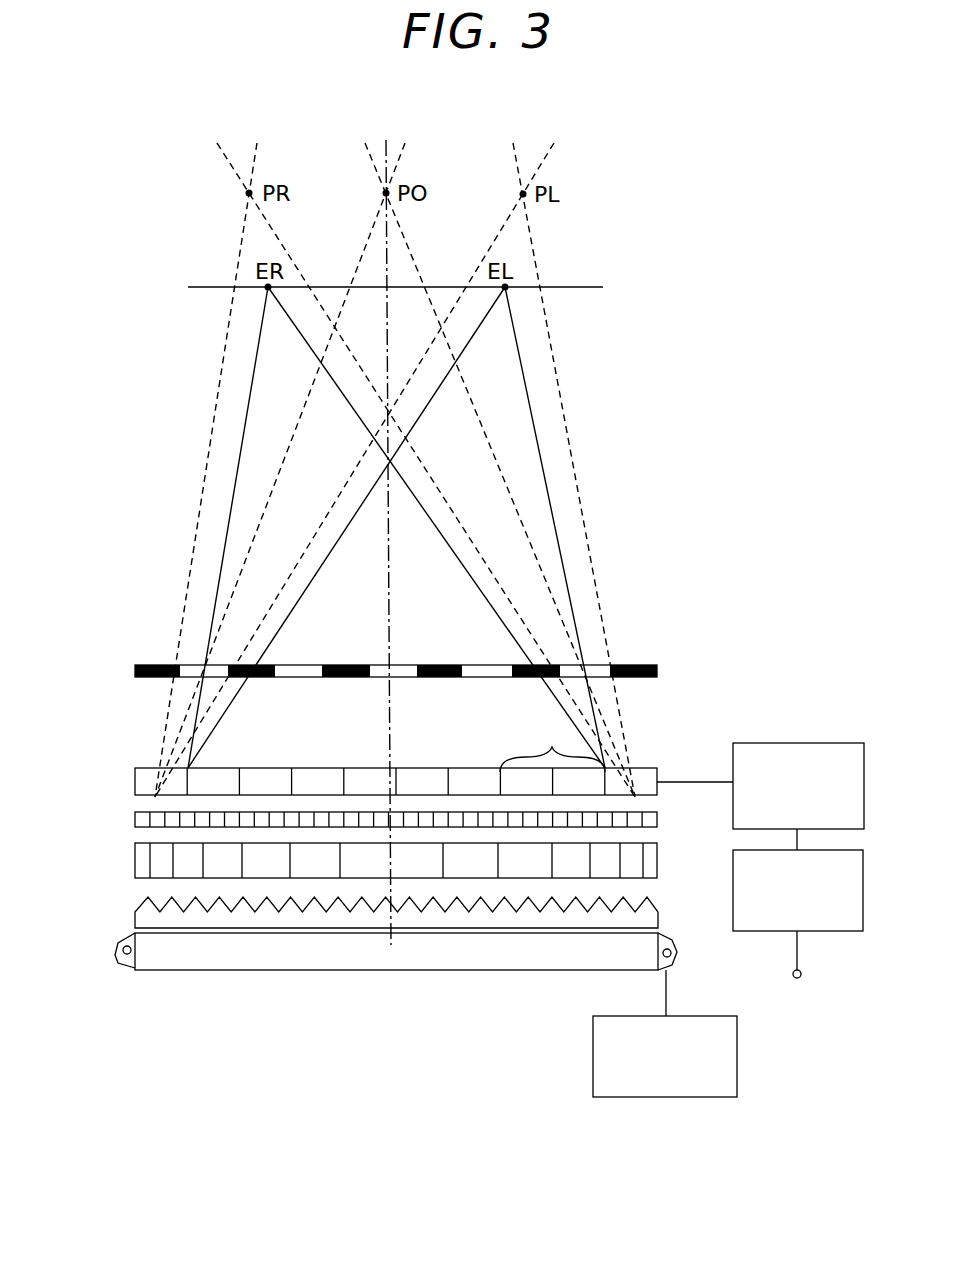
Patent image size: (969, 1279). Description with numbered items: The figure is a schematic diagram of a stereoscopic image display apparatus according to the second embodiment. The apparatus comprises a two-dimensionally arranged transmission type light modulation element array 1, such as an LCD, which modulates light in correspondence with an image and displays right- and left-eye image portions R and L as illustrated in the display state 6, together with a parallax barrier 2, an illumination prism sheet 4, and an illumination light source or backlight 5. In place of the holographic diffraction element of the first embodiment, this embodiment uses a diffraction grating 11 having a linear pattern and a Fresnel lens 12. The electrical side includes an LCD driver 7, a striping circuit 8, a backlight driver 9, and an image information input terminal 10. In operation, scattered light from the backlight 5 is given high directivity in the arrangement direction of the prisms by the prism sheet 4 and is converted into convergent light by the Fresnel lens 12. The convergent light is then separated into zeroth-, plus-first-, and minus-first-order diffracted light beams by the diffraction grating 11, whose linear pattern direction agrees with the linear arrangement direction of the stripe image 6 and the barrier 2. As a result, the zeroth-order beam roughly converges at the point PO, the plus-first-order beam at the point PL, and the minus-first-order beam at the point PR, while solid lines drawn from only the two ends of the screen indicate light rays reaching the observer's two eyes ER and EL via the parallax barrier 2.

The transmission type light modulation element array 1 is at (135, 782).
The parallax barrier 2 is at (135, 672).
The illumination prism sheet 4 is at (135, 918).
The illumination light source (backlight) 5 is at (155, 970).
The display state 6 is at (552, 744).
The LCD driver 7 is at (733, 762).
The striping circuit 8 is at (733, 877).
The backlight driver 9 is at (704, 1016).
The image information input terminal 10 is at (797, 979).
The diffraction grating 11 is at (135, 822).
The Fresnel lens 12 is at (135, 862).